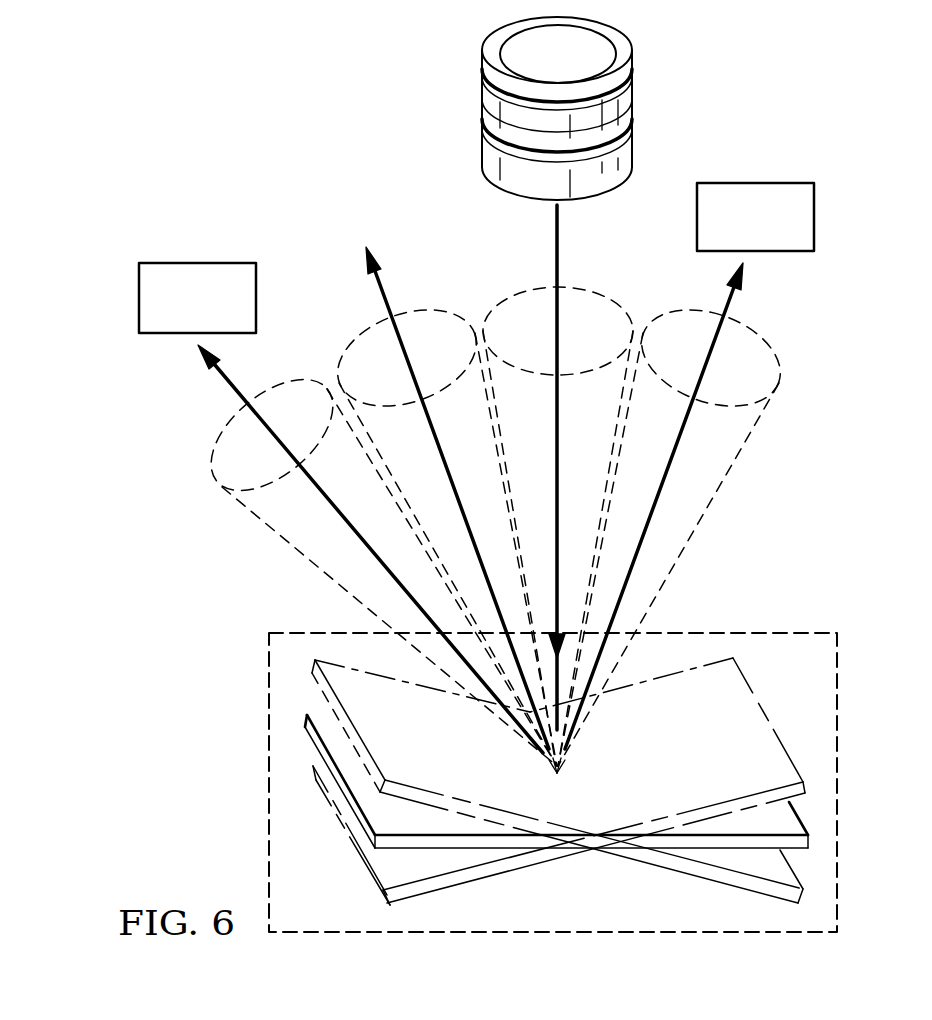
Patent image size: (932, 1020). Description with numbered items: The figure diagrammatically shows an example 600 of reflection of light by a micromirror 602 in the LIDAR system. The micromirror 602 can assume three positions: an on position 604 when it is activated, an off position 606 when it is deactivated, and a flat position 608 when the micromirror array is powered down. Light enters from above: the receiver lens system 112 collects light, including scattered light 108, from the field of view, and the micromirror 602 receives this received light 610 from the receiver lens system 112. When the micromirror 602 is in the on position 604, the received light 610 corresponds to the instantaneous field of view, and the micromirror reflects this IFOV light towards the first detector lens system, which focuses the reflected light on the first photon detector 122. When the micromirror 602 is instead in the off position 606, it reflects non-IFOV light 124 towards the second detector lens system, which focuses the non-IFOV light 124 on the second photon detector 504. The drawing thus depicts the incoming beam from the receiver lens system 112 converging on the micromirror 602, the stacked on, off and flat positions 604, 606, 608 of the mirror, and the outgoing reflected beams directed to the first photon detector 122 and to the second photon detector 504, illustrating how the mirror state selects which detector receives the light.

The example of reflection of light by a micromirror 600 is at (238, 137).
The receiver lens system 112 is at (483, 95).
The second photon detector 504 is at (139, 292).
The first photon detector 122 is at (814, 216).
The non-IFOV light 124 is at (285, 542).
The received light 610 is at (588, 292).
The scattered light 108 is at (762, 352).
The micromirror 602 is at (850, 791).
The on position 604 is at (353, 850).
The off position 606 is at (760, 700).
The flat position 608 is at (808, 842).